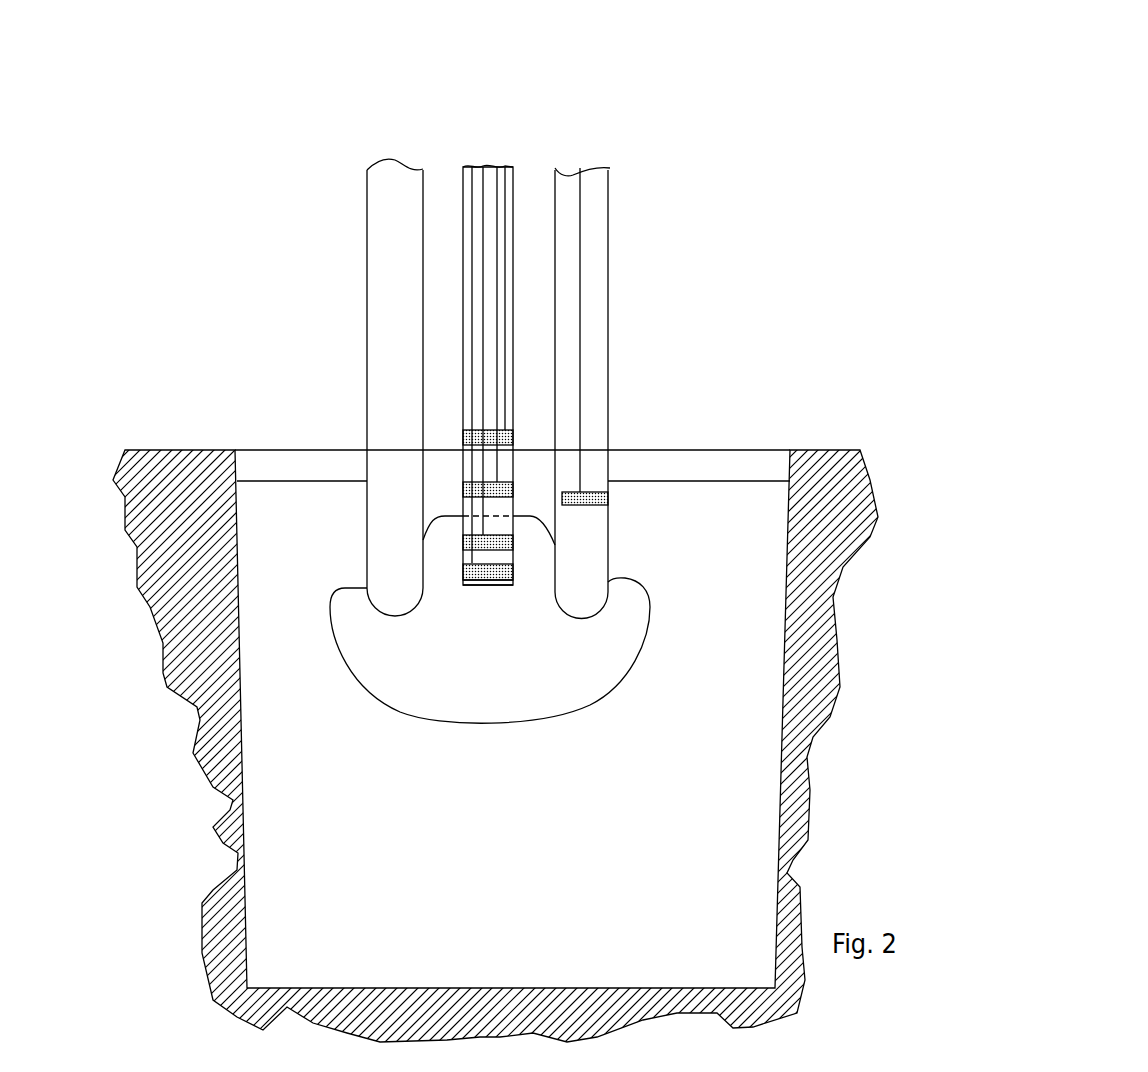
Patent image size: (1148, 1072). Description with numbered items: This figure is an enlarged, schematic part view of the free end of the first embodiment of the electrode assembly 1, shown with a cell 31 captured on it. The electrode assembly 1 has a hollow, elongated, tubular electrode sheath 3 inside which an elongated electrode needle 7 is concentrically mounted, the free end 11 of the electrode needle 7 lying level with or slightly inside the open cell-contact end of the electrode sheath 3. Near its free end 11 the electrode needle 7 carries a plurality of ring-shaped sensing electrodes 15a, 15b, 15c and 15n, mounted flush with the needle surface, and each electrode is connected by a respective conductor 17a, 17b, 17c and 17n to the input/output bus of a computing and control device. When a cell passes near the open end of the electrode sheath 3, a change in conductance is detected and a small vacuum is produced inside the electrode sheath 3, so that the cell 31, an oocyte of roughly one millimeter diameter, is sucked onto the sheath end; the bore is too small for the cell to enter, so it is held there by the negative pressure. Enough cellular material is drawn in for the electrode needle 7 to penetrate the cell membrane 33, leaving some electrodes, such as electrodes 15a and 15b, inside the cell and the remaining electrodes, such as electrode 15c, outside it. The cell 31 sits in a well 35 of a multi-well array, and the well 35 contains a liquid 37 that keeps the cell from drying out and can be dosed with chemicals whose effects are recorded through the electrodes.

The electrode assembly 1 is at (503, 394).
The electrode sheath 3 is at (743, 393).
The electrode needle 7 is at (478, 587).
The free end of electrode needle 11 is at (507, 587).
The sensing electrode 15a is at (463, 563).
The sensing electrode 15b is at (485, 533).
The sensing electrode 15c is at (493, 481).
The sensing electrode 15n is at (493, 429).
The conductor 17a is at (473, 253).
The conductor 17b is at (483, 185).
The conductor 17c is at (497, 243).
The conductor 17n is at (505, 193).
The cell 31 is at (627, 617).
The cell membrane 33 is at (343, 587).
The well 35 is at (241, 428).
The liquid 37 is at (668, 697).